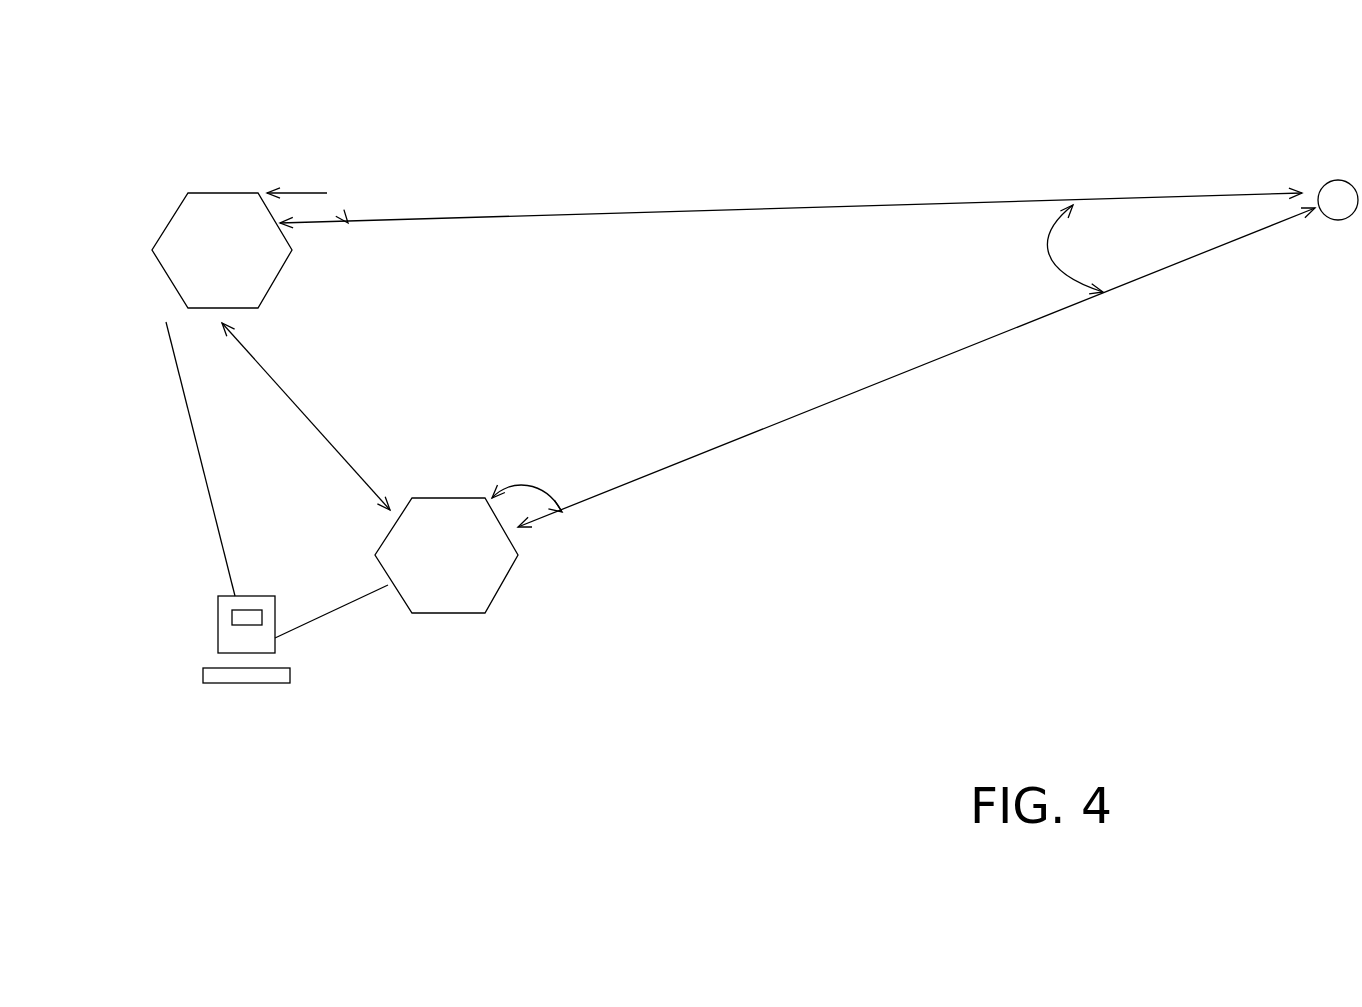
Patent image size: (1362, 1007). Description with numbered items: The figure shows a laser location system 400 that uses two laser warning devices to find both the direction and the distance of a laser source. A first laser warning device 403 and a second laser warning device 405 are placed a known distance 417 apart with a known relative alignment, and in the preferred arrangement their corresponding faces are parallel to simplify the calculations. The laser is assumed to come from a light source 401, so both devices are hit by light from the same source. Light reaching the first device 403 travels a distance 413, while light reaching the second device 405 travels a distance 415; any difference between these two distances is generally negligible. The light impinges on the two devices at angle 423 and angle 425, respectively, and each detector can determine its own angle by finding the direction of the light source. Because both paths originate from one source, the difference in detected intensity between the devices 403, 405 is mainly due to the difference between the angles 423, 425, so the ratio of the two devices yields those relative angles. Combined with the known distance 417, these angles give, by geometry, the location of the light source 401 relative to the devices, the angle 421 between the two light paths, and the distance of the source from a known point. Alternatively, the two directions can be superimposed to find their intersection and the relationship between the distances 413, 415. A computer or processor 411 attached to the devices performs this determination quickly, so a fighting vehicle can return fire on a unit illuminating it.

The laser location system 400 is at (548, 732).
The light source 401 is at (1345, 213).
The first laser warning device 403 is at (165, 293).
The second laser warning device 405 is at (445, 587).
The computer or processor 411 is at (218, 640).
The distance 413 is at (608, 213).
The distance 415 is at (875, 390).
The known distance 417 is at (293, 412).
The angle 421 is at (1043, 250).
The angle 423 is at (348, 223).
The angle 425 is at (562, 512).